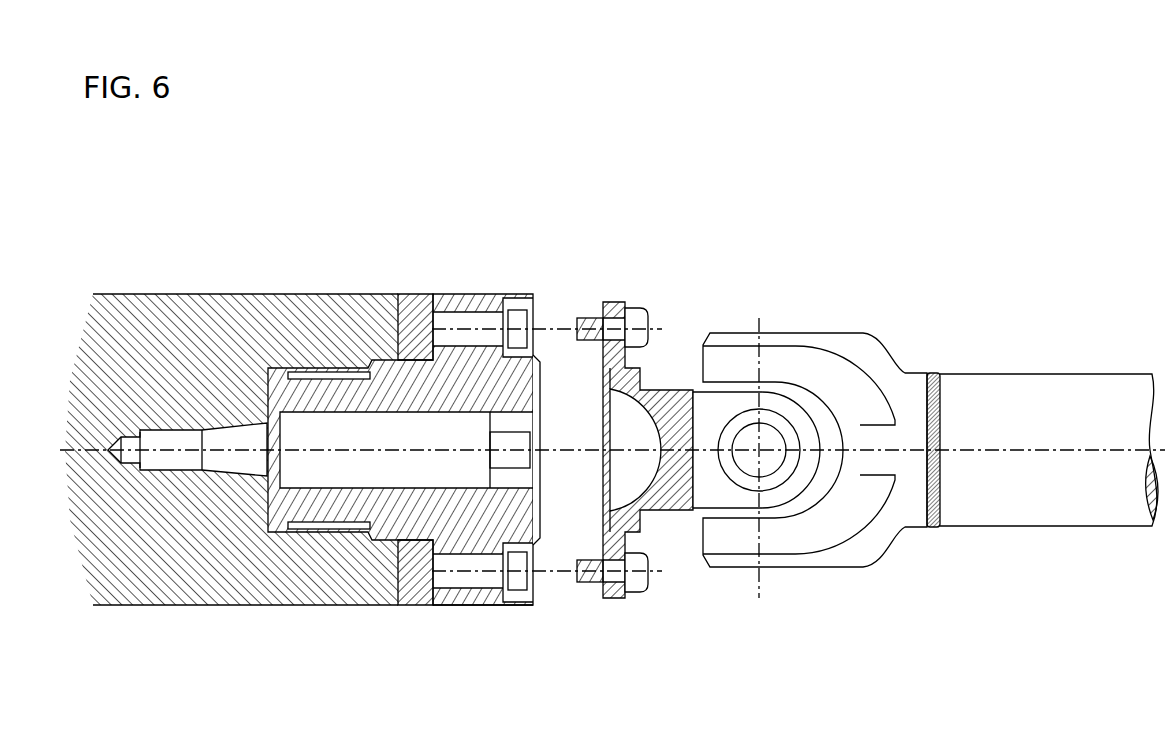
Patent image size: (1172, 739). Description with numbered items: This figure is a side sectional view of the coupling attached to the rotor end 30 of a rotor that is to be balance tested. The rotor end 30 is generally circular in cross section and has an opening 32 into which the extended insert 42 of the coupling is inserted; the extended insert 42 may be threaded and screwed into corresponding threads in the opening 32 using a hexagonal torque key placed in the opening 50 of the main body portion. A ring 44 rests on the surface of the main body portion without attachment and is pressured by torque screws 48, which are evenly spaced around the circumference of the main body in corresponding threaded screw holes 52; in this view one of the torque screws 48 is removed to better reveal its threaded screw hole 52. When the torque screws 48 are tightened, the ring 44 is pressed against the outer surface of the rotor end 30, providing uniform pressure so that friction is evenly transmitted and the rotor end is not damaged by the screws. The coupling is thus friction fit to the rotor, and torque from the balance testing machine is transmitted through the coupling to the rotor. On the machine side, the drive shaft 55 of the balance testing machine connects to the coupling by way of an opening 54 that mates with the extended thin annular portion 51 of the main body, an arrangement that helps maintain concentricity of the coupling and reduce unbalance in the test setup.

The rotor end 30 is at (289, 293).
The opening 32 is at (273, 382).
The extended insert 42 is at (328, 396).
The ring 44 is at (412, 305).
The torque screws 48 is at (473, 323).
The opening 50 is at (518, 432).
The extended thin portion 51 is at (541, 385).
The threaded screw hole 52 is at (495, 606).
The opening 54 is at (603, 492).
The drive shaft 55 is at (1005, 374).